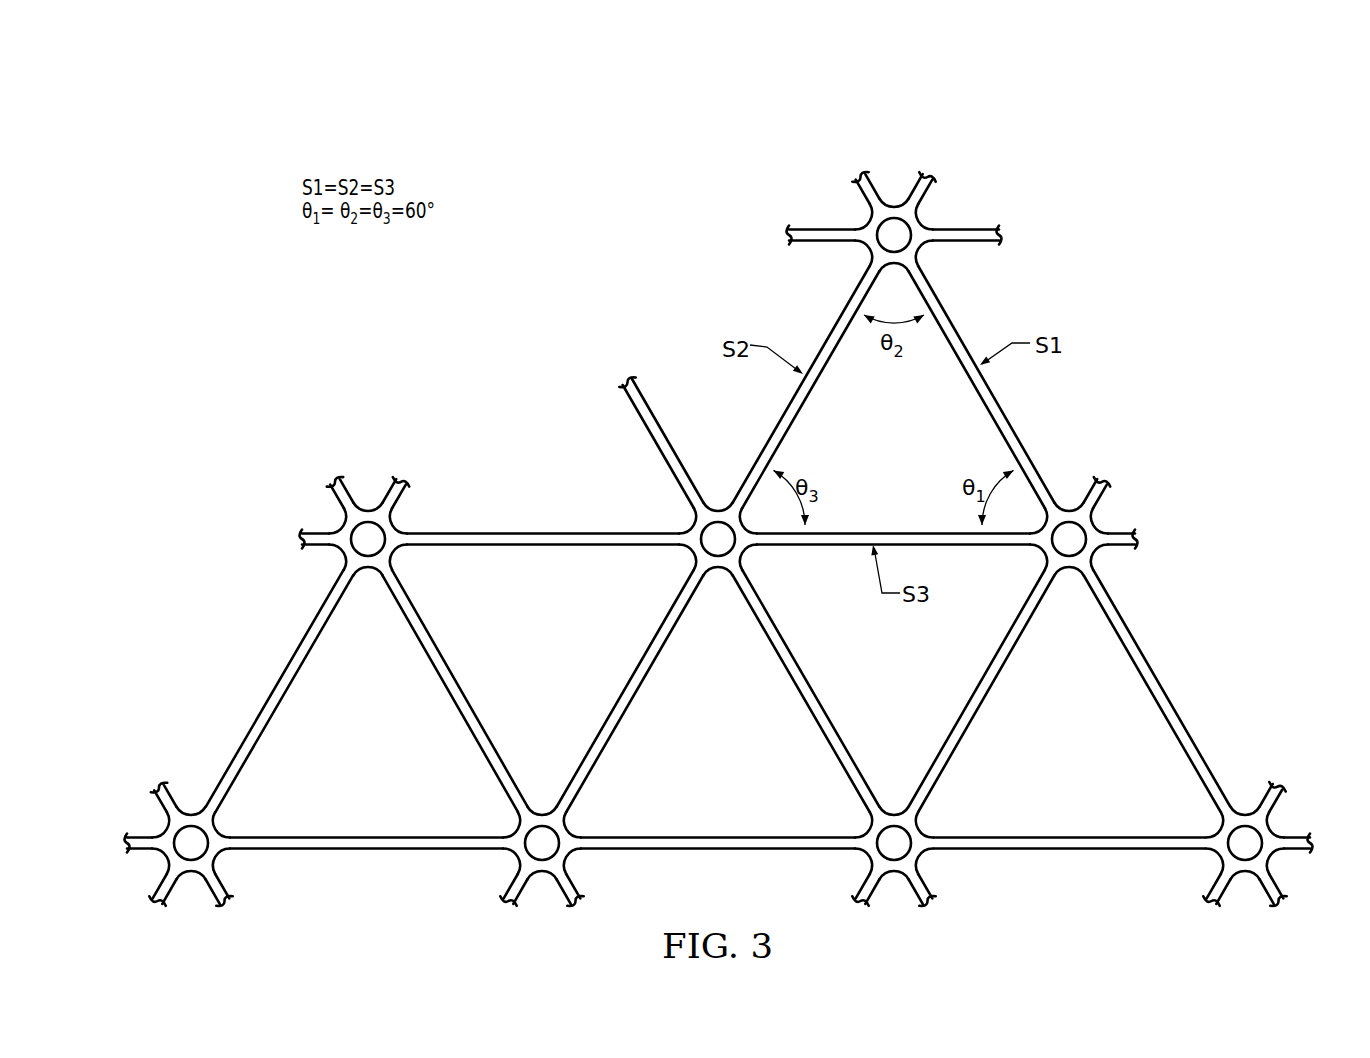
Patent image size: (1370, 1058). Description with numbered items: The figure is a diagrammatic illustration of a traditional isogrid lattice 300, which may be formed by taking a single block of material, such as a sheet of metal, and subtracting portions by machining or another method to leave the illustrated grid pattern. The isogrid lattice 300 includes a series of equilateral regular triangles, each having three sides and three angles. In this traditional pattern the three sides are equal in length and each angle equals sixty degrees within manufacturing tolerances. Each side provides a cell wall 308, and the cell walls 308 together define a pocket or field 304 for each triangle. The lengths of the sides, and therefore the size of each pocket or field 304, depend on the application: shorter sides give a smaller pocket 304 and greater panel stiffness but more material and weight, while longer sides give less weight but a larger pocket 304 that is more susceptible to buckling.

The isogrid lattice 300 is at (719, 488).
The pocket or field 304 is at (1118, 708).
The cell wall 308 is at (1070, 849).